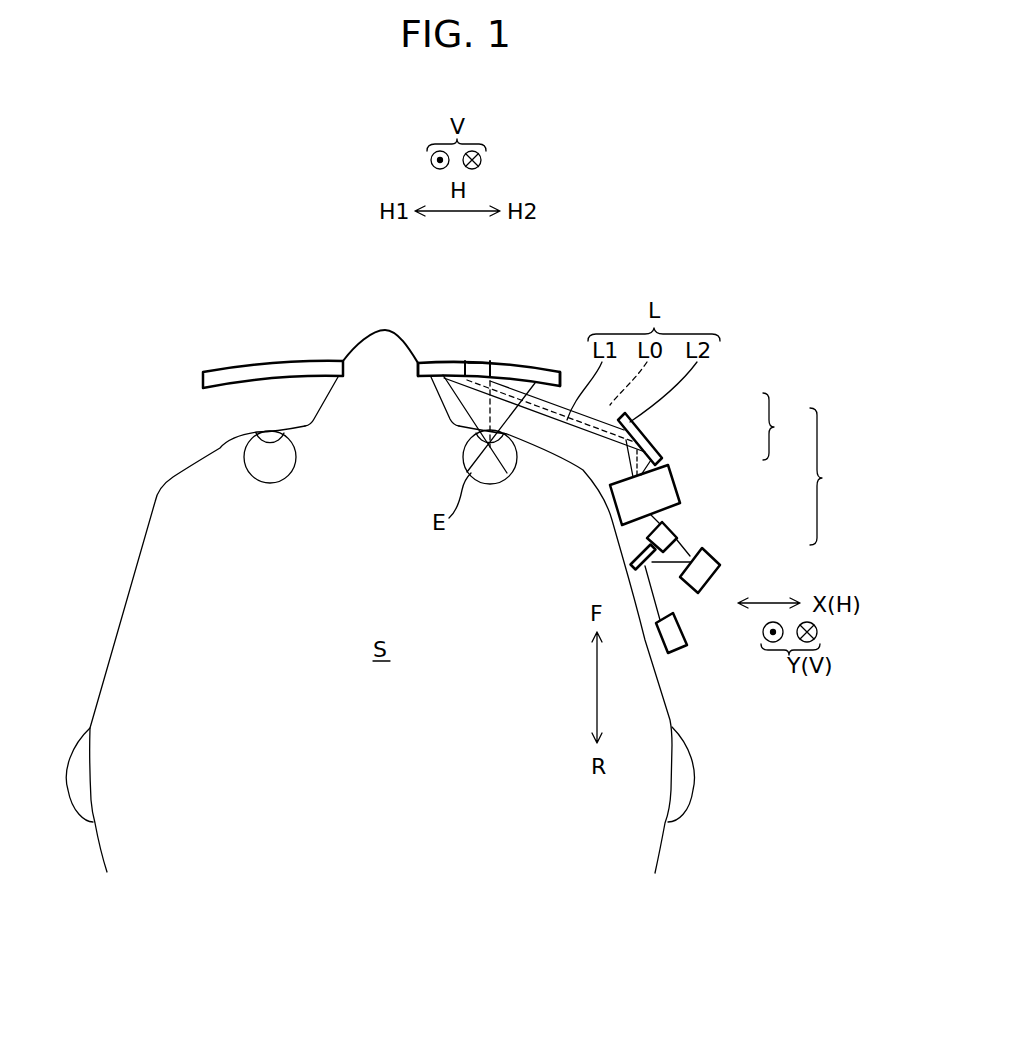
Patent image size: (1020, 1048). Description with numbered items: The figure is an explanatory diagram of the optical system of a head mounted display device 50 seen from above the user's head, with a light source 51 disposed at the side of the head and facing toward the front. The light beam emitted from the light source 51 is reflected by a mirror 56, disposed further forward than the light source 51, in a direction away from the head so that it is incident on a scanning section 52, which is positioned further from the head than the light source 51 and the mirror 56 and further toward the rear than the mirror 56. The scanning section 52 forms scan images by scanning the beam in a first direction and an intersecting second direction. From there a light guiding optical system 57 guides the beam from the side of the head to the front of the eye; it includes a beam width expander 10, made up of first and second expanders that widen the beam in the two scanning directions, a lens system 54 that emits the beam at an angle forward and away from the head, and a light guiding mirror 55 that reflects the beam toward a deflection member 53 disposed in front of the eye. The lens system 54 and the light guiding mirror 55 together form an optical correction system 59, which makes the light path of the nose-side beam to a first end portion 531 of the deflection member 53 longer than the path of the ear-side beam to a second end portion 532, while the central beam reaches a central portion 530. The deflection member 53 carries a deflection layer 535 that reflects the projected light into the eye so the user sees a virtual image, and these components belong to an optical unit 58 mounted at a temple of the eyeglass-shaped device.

The head mounted display device 50 is at (737, 243).
The optical unit 58 is at (758, 354).
The deflection member 53 is at (503, 363).
The central portion 530 is at (490, 364).
The first end portion 531 is at (421, 362).
The second end portion 532 is at (552, 371).
The deflection layer 535 is at (462, 363).
The light guiding mirror 55 is at (628, 414).
The lens system 54 is at (670, 467).
The optical correction system 59 is at (783, 426).
The light guiding optical system 57 is at (832, 476).
The beam width expander 10 is at (672, 530).
The scanning section 52 is at (720, 566).
The mirror 56 is at (630, 556).
The light source 51 is at (670, 631).